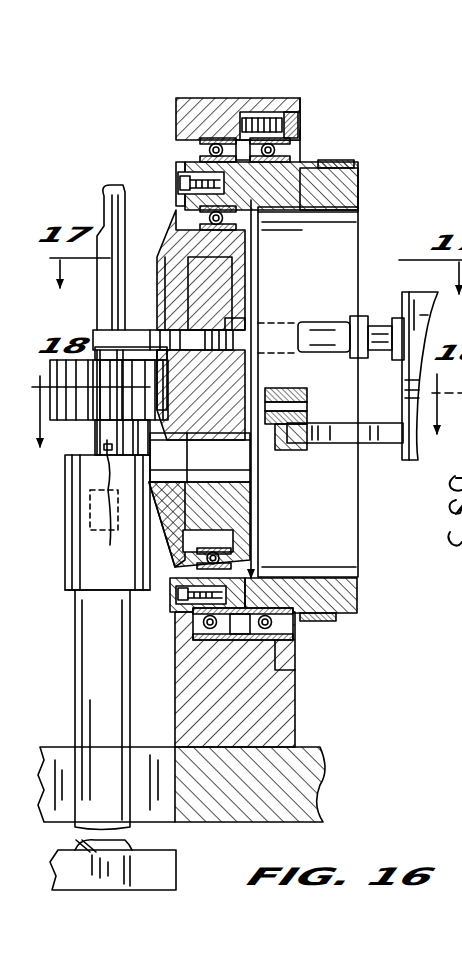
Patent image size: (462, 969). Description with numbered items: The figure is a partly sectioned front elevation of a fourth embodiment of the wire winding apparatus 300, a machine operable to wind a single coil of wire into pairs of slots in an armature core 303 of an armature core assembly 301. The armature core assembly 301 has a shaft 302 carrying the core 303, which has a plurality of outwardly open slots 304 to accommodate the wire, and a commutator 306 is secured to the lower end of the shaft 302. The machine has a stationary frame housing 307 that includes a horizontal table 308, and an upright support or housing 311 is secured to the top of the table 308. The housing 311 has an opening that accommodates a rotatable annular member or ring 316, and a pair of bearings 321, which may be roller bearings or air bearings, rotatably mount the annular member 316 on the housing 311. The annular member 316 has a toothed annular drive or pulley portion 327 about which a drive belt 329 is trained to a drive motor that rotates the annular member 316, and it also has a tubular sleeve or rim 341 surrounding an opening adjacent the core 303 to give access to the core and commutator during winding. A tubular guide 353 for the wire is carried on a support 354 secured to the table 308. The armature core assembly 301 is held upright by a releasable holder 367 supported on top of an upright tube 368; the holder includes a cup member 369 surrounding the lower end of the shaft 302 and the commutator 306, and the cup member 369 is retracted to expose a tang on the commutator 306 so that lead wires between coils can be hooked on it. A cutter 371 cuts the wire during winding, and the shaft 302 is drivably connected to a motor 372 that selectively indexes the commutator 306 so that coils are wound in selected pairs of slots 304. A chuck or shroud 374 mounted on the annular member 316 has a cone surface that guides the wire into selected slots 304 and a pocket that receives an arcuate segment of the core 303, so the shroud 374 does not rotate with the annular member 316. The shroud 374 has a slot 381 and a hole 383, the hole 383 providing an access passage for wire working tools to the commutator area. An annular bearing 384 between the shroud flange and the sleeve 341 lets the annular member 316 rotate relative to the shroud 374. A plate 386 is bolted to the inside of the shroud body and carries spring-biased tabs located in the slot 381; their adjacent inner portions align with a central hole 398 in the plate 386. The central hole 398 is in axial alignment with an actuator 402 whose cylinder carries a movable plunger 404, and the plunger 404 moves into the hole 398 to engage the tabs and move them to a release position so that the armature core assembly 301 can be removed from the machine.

The wire winding apparatus 300 is at (313, 137).
The armature core assembly 301 is at (75, 195).
The shaft 302 is at (112, 185).
The armature core 303 is at (150, 443).
The slots 304 is at (102, 330).
The commutator 306 is at (85, 490).
The stationary frame housing 307 is at (332, 748).
The horizontal table 308 is at (290, 796).
The upright support or housing 311 is at (228, 98).
The rotatable annular member or ring 316 is at (338, 142).
The bearings 321 is at (216, 144).
The annular drive or pulley portion 327 is at (340, 186).
The drive belt 329 is at (340, 164).
The tubular sleeve or rim 341 is at (330, 600).
The tubular guide 353 is at (286, 440).
The support 354 is at (340, 446).
The releasable holder 367 is at (64, 592).
The upright tube 368 is at (100, 688).
The cup member 369 is at (128, 580).
The cutter 371 is at (103, 505).
The motor 372 is at (160, 872).
The chuck or shroud 374 is at (162, 238).
The slot 381 is at (212, 322).
The hole 383 is at (225, 472).
The annular bearing 384 is at (228, 552).
The plate 386 is at (232, 512).
The central hole 398 is at (245, 322).
The actuator 402 is at (415, 292).
The movable plunger 404 is at (330, 332).